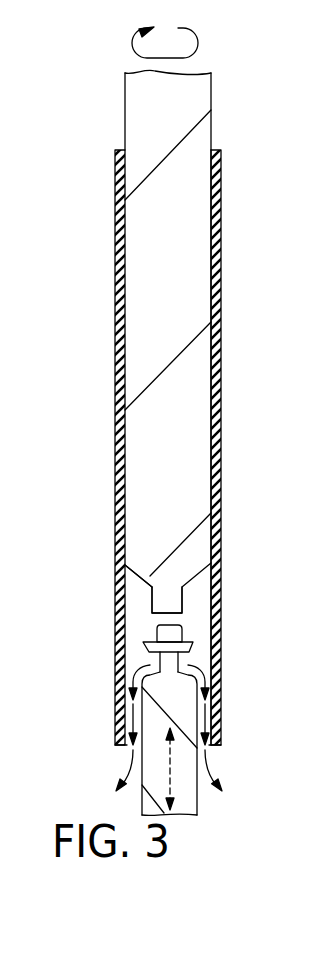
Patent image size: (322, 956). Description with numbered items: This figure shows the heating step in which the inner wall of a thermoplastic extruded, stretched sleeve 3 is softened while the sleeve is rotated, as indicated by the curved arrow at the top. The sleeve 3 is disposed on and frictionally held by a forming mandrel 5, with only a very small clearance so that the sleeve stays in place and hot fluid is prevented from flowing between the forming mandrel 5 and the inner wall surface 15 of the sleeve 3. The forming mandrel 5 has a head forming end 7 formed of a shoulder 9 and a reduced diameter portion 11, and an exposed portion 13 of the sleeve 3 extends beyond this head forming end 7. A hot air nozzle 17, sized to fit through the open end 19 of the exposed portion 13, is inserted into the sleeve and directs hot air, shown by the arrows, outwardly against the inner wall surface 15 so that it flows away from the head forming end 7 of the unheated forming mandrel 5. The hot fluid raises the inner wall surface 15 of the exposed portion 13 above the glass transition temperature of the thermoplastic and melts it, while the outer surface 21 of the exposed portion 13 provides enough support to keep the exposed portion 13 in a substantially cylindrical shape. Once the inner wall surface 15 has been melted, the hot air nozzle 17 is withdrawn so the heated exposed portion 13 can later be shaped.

The thermoplastic extruded, stretched sleeve 3 is at (221, 245).
The forming mandrel 5 is at (197, 103).
The head forming end 7 is at (163, 537).
The shoulder 9 is at (152, 587).
The reduced diameter portion 11 is at (152, 603).
The exposed portion 13 is at (230, 586).
The inner wall surface 15 is at (126, 354).
The hot air nozzle 17 is at (181, 707).
The open end 19 is at (125, 746).
The outer surface 21 is at (115, 703).